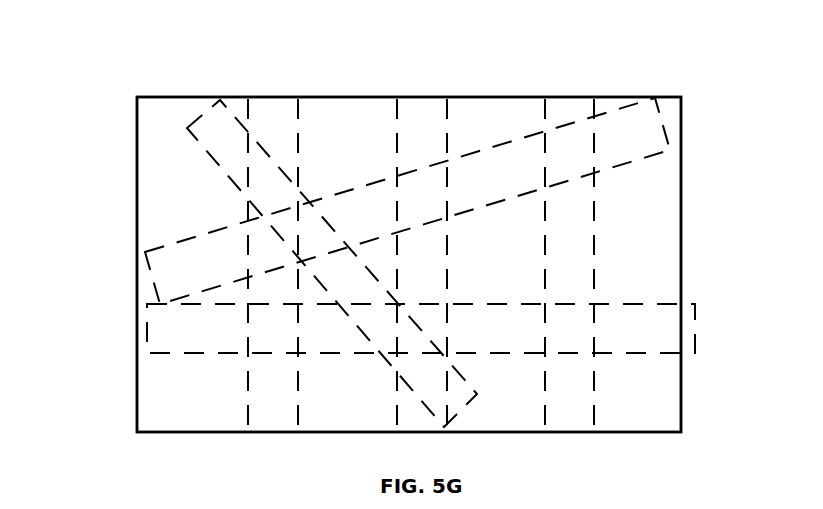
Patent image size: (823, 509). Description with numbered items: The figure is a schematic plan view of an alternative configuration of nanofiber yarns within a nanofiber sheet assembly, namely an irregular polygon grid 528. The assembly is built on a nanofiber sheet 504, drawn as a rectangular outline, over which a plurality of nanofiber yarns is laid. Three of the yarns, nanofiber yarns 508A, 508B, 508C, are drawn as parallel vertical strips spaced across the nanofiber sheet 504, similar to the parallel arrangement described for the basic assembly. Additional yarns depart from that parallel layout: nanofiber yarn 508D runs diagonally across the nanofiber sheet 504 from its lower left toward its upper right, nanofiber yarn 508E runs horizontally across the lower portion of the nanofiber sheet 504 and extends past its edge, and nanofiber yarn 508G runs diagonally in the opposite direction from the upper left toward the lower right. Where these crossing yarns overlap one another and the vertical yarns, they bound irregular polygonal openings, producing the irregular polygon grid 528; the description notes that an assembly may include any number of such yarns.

The irregular polygon grid 528 is at (133, 86).
The nanofiber sheet 504 is at (679, 97).
The nanofiber yarn 508A is at (300, 118).
The nanofiber yarn 508B is at (447, 110).
The nanofiber yarn 508C is at (572, 95).
The nanofiber yarn 508D is at (120, 272).
The nanofiber yarn 508E is at (146, 343).
The nanofiber yarn 508G is at (207, 109).